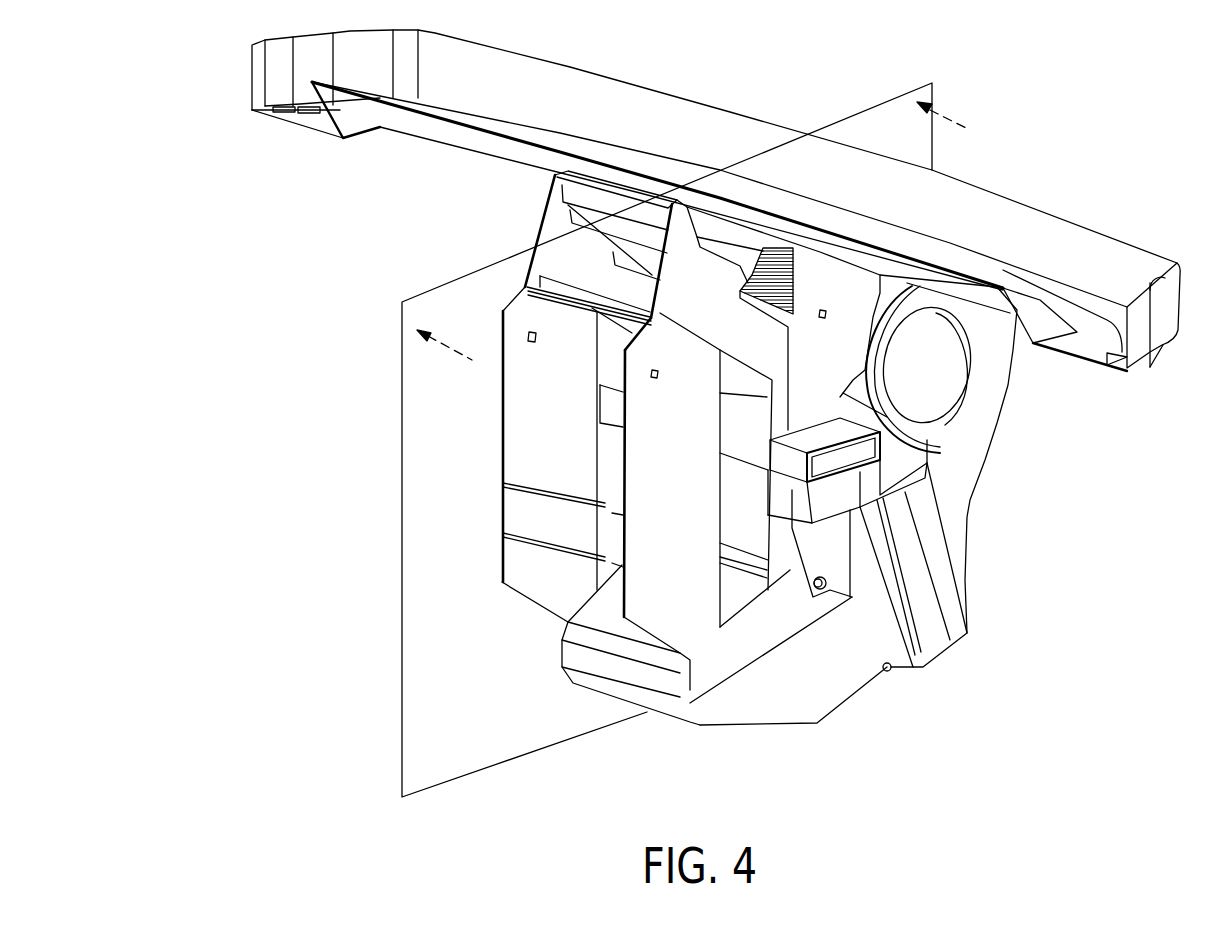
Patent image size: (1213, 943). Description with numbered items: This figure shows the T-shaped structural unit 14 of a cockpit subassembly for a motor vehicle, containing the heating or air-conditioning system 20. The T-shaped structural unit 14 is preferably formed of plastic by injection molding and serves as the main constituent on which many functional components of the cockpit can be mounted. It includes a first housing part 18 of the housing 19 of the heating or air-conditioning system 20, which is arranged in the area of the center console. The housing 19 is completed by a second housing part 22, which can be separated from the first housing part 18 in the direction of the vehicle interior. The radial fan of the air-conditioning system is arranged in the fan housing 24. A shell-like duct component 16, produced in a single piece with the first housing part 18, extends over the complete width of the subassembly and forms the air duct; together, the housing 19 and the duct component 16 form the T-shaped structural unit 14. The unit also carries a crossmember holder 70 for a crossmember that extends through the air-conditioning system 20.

The T-shaped structural unit 14 is at (282, 336).
The shell-like duct component 16 is at (584, 104).
The first housing part 18 is at (822, 360).
The housing 19 is at (852, 691).
The heating or air-conditioning system 20 is at (1005, 596).
The second housing part 22 is at (513, 443).
The fan housing 24 is at (942, 454).
The crossmember holder 70 is at (742, 263).